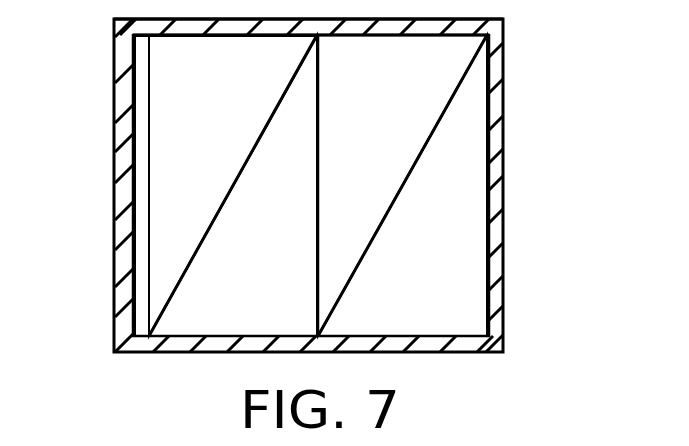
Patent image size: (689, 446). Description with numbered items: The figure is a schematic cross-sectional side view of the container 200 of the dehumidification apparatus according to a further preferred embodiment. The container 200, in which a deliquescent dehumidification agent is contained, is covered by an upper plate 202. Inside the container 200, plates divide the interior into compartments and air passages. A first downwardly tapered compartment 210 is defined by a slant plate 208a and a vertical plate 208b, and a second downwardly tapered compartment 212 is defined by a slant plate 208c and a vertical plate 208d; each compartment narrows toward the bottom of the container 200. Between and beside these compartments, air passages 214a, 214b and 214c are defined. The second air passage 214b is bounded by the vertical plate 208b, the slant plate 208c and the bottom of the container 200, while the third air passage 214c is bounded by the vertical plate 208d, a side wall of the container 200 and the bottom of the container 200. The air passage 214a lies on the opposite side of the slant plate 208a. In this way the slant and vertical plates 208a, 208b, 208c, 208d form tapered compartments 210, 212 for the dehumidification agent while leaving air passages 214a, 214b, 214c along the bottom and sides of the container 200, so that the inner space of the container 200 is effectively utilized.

The container 200 is at (503, 126).
The upper plate 202 is at (472, 19).
The slant plate 208a is at (420, 153).
The vertical plate 208b is at (318, 87).
The slant plate 208c is at (252, 155).
The vertical plate 208d is at (150, 88).
The first downwardly tapered compartment 210 is at (395, 150).
The second downwardly tapered compartment 212 is at (224, 150).
The air passage 214a is at (463, 281).
The second air passage 214b is at (285, 279).
The third air passage 214c is at (140, 220).